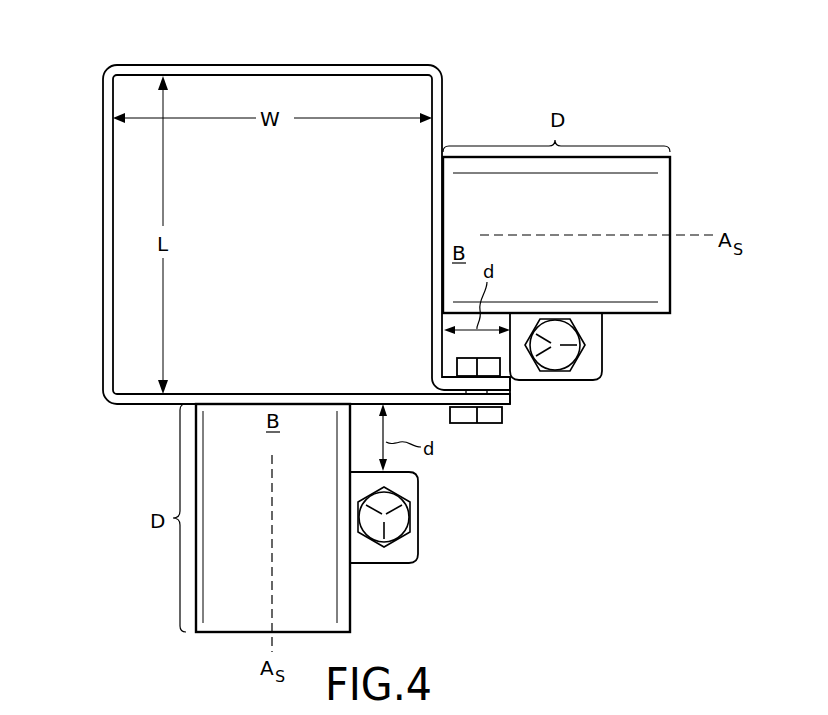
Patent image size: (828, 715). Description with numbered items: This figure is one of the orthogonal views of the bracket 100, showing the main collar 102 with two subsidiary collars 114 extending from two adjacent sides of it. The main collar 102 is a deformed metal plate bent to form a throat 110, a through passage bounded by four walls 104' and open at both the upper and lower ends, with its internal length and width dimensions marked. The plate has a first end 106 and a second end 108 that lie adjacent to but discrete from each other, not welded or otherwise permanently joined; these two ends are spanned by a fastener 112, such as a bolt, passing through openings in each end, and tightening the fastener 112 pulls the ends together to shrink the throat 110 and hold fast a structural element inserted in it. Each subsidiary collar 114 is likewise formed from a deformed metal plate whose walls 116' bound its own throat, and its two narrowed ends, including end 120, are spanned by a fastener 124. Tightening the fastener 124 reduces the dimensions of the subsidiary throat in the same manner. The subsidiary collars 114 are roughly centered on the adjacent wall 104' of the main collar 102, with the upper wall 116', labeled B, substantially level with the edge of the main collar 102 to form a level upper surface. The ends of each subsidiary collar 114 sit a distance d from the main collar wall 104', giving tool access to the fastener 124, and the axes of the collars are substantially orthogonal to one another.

The bracket 100 is at (578, 75).
The main collar 102 is at (267, 216).
The wall 104' is at (267, 216).
The first end 106 is at (522, 431).
The second end 108 is at (452, 361).
The throat 110 is at (126, 338).
The fastener 112 is at (468, 424).
The subsidiary collar 114 is at (650, 273).
The wall 116' is at (426, 411).
The end 120 is at (615, 355).
The fastener 124 is at (568, 357).